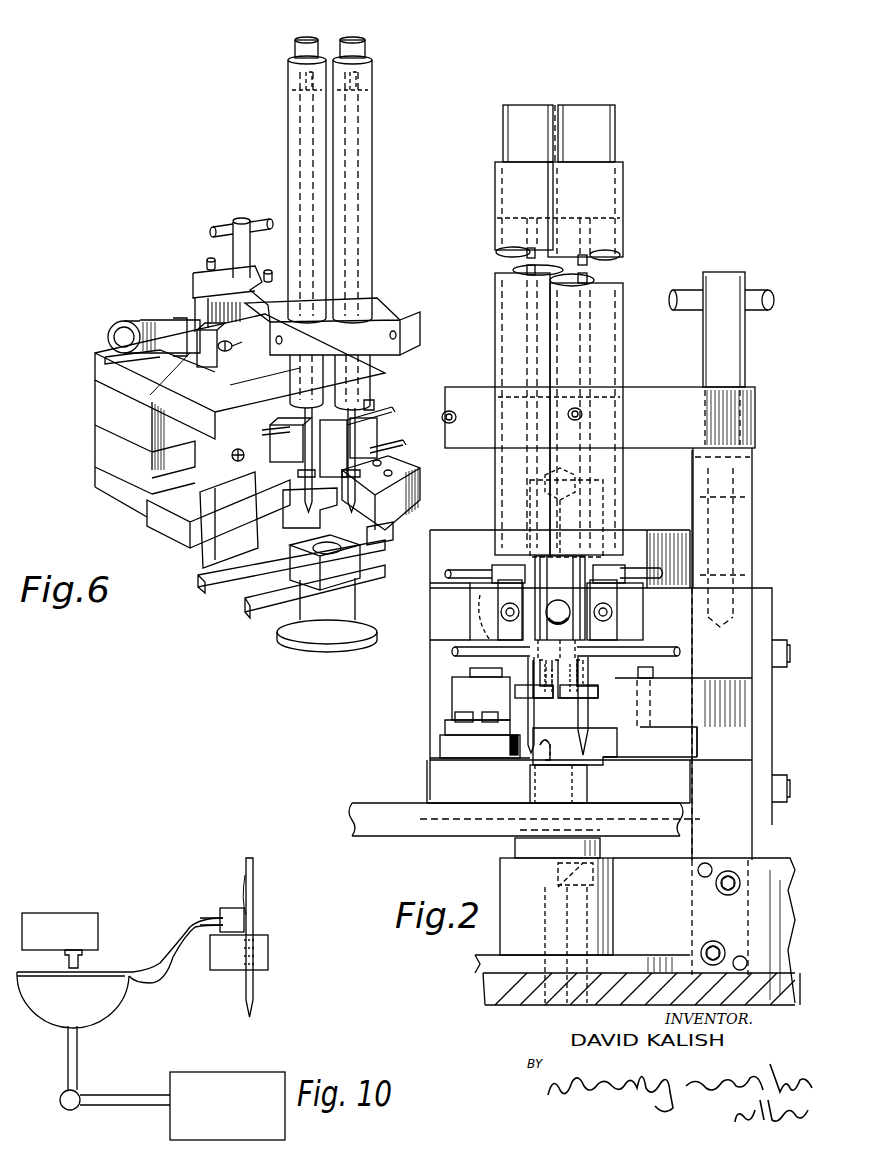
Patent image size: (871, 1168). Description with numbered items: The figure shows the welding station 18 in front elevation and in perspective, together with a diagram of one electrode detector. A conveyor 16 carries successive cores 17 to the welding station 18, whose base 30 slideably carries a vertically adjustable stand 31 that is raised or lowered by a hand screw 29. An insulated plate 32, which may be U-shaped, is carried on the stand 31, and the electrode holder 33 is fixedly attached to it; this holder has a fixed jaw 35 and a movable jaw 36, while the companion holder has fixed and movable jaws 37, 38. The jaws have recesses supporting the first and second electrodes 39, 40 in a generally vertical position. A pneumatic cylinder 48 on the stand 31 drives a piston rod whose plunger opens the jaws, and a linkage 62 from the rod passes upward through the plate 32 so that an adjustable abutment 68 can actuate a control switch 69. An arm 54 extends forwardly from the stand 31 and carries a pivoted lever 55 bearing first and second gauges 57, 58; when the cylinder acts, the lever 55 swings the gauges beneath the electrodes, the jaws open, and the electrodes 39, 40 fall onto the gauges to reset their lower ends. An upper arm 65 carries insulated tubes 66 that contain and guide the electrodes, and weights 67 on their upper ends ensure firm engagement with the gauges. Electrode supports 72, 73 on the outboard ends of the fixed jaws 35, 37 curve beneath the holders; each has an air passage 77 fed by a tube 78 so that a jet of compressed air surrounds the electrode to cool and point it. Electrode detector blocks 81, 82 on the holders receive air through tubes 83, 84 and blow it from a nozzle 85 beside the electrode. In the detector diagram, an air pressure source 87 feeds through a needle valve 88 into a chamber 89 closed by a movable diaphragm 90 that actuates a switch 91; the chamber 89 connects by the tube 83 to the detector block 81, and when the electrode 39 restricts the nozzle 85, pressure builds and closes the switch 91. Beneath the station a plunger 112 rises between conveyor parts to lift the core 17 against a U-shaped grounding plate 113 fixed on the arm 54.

In FIG. 6, the conveyor 16 is at (260, 610).
In FIG. 2, the conveyor 16 is at (360, 803).
In FIG. 6, the core 17 is at (362, 578).
In FIG. 2, the core 17 is at (578, 782).
In FIG. 6, the welding station 18 is at (222, 219).
In FIG. 2, the welding station 18 is at (660, 354).
In FIG. 6, the hand screw 29 is at (251, 254).
In FIG. 2, the hand screw 29 is at (745, 366).
In FIG. 2, the base 30 is at (480, 978).
In FIG. 6, the stand 31 is at (110, 490).
In FIG. 2, the stand 31 is at (427, 786).
In FIG. 6, the insulated plate 32 is at (105, 370).
In FIG. 2, the insulated plate 32 is at (475, 532).
In FIG. 10, the first electrode holder 33 is at (258, 936).
In FIG. 6, the fixed jaw 35 is at (378, 430).
In FIG. 2, the fixed jaw 35 is at (645, 608).
In FIG. 2, the movable jaw 36 is at (548, 592).
In FIG. 2, the fixed jaw 37 is at (470, 610).
In FIG. 2, the movable jaw 38 is at (560, 597).
In FIG. 6, the first electrode 39 is at (420, 488).
In FIG. 2, the first electrode 39 is at (610, 262).
In FIG. 10, the first electrode 39 is at (255, 877).
In FIG. 6, the second electrode 40 is at (300, 528).
In FIG. 2, the second electrode 40 is at (503, 256).
In FIG. 2, the pneumatic cylinder 48 is at (470, 603).
In FIG. 6, the arm 54 is at (168, 498).
In FIG. 2, the arm 54 is at (440, 757).
In FIG. 6, the pivoted lever 55 is at (222, 515).
In FIG. 2, the pivoted lever 55 is at (452, 718).
In FIG. 6, the first gauge 57 is at (340, 527).
In FIG. 2, the first gauge 57 is at (545, 752).
In FIG. 2, the second gauge 58 is at (500, 752).
In FIG. 6, the linkage 62 is at (200, 355).
In FIG. 2, the linkage 62 is at (575, 513).
In FIG. 6, the upper arm 65 is at (193, 277).
In FIG. 2, the upper arm 65 is at (648, 390).
In FIG. 6, the insulated tubes 66 is at (288, 96).
In FIG. 2, the insulated tubes 66 is at (495, 290).
In FIG. 6, the weights 67 is at (358, 40).
In FIG. 2, the weights 67 is at (572, 105).
In FIG. 6, the adjustable abutment 68 is at (222, 352).
In FIG. 2, the adjustable abutment 68 is at (580, 488).
In FIG. 6, the control switch 69 is at (158, 320).
In FIG. 2, the electrode support 72 is at (602, 668).
In FIG. 2, the electrode support 73 is at (455, 645).
In FIG. 2, the air passage 77 is at (568, 700).
In FIG. 6, the tube 78 is at (402, 446).
In FIG. 2, the tube 78 is at (645, 650).
In FIG. 6, the electrode detector block 81 is at (374, 402).
In FIG. 10, the electrode detector block 81 is at (226, 908).
In FIG. 6, the electrode detector block 82 is at (292, 418).
In FIG. 6, the tube 83 is at (392, 407).
In FIG. 2, the tube 83 is at (635, 568).
In FIG. 10, the tube 83 is at (175, 940).
In FIG. 6, the tube 84 is at (262, 432).
In FIG. 2, the tube 84 is at (455, 572).
In FIG. 10, the nozzle 85 is at (246, 905).
In FIG. 10, the air pressure source 87 is at (182, 1072).
In FIG. 10, the needle valve 88 is at (80, 1094).
In FIG. 10, the chamber 89 is at (42, 1022).
In FIG. 10, the movable diaphragm 90 is at (100, 972).
In FIG. 10, the switch 91 is at (60, 913).
In FIG. 6, the plunger 112 is at (312, 610).
In FIG. 2, the plunger 112 is at (525, 820).
In FIG. 6, the grounding plate 113 is at (393, 535).
In FIG. 2, the grounding plate 113 is at (625, 760).